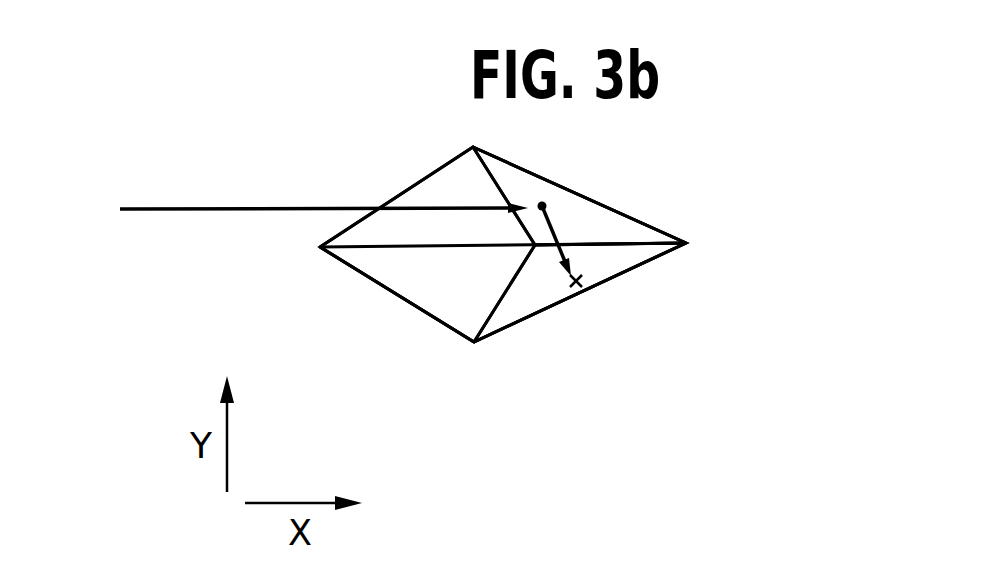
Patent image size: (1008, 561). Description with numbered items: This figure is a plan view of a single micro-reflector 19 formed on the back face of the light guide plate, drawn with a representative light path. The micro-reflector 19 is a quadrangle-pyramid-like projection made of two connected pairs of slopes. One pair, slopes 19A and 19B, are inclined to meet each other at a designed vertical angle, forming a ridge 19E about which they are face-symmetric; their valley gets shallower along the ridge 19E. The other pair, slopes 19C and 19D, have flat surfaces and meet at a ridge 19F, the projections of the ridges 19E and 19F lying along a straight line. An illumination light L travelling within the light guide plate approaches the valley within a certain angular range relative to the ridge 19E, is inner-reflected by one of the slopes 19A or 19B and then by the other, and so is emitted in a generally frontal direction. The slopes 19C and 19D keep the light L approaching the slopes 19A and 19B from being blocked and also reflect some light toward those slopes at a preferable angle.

The prism 19 is at (404, 314).
The slope 19A is at (620, 262).
The slope 19B is at (567, 216).
The slope 19C is at (448, 316).
The slope 19D is at (450, 180).
The ridge 19E is at (640, 243).
The ridge 19F is at (358, 250).
The illumination light L is at (268, 207).